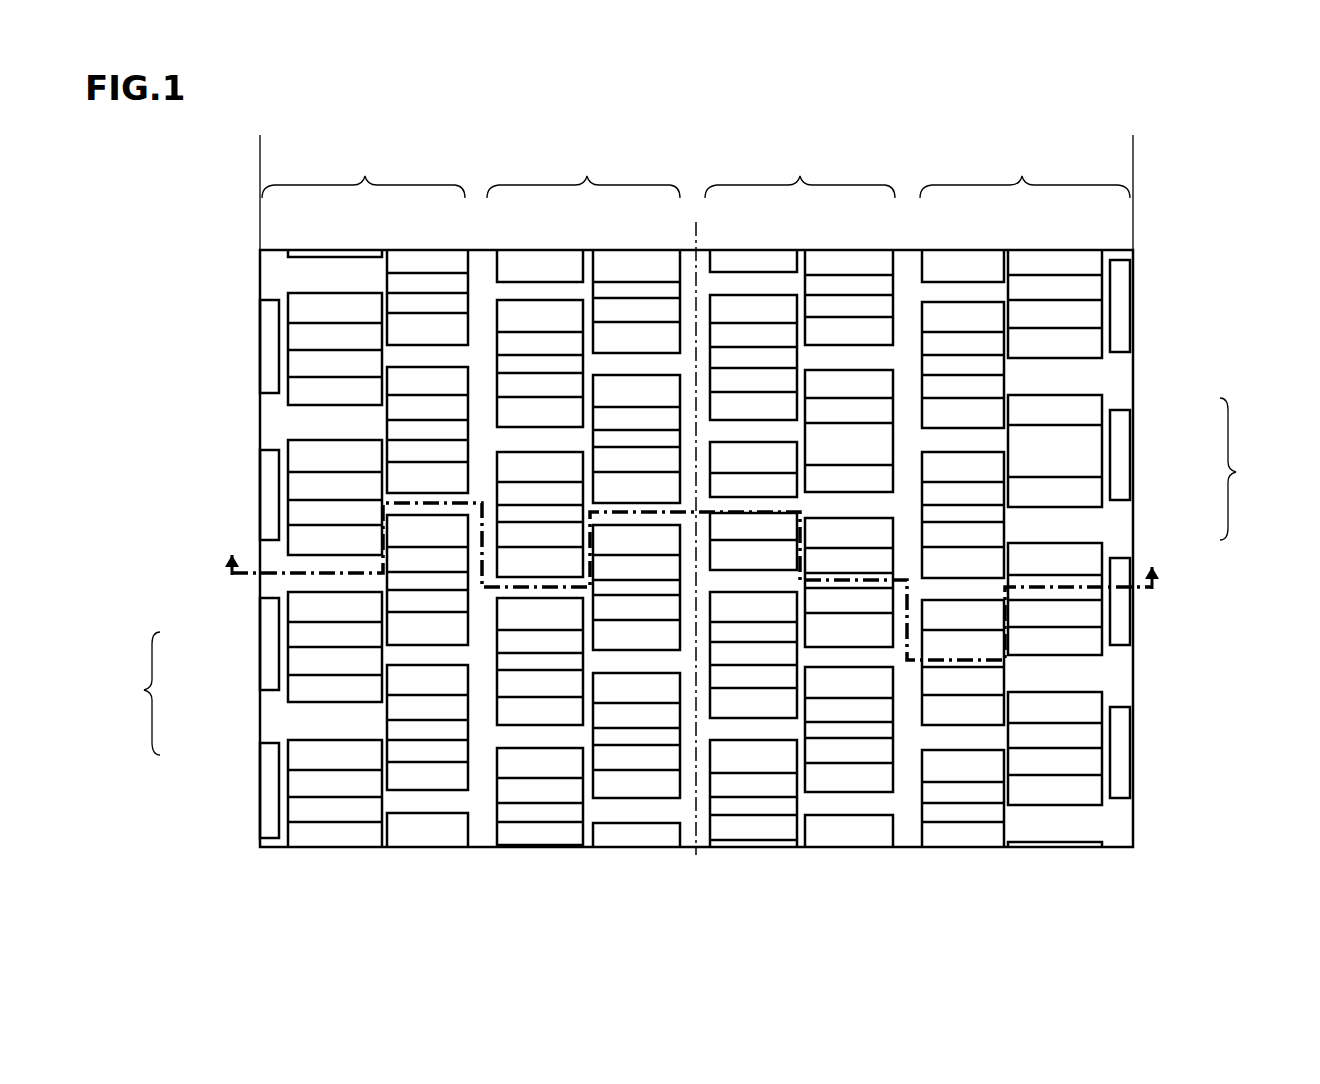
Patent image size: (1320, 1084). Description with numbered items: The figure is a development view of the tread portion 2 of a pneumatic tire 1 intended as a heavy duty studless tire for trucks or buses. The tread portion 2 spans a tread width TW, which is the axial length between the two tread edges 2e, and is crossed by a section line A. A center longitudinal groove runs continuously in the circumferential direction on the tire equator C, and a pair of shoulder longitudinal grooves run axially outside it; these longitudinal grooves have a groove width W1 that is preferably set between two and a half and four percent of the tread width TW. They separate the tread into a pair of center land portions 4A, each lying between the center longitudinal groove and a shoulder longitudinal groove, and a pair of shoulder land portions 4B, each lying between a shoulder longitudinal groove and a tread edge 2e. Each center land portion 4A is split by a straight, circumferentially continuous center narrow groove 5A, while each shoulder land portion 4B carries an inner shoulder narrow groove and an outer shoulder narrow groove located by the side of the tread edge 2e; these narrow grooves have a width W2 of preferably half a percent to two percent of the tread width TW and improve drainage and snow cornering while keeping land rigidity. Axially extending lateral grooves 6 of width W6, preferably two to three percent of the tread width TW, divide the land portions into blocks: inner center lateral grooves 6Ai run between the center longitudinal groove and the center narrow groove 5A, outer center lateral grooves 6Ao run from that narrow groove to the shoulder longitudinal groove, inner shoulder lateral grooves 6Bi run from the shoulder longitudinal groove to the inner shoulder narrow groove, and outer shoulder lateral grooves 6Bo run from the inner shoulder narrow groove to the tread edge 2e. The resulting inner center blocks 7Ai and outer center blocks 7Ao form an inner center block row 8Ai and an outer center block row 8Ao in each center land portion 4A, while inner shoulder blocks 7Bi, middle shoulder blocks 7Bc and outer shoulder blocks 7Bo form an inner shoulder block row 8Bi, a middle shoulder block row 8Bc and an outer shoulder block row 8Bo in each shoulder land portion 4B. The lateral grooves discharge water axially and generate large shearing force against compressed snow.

The pneumatic tire 1 is at (1215, 262).
The tread portion 2 is at (325, 393).
The tread edge 2e is at (268, 322).
The center land portion 4A is at (583, 174).
The shoulder land portion 4B is at (363, 174).
The center narrow groove 5A is at (590, 827).
The lateral groove 6 is at (693, 576).
The inner center lateral groove 6Ai is at (762, 432).
The outer center lateral groove 6Ao is at (848, 508).
The inner shoulder lateral groove 6Bi is at (942, 592).
The outer shoulder lateral groove 6Bo is at (1055, 530).
The outer shoulder block 7Bo is at (272, 805).
The middle shoulder block 7Bc is at (338, 773).
The inner shoulder block 7Bi is at (435, 768).
The outer center block 7Ao is at (562, 702).
The inner center block 7Ai is at (637, 775).
The outer shoulder block row 8Bo is at (268, 322).
The middle shoulder block row 8Bc is at (360, 312).
The inner shoulder block row 8Bi is at (437, 390).
The outer center block row 8Ao is at (544, 327).
The inner center block row 8Ai is at (613, 388).
The tread width TW is at (1133, 143).
The groove width of longitudinal grooves W1 is at (860, 755).
The groove width of narrow grooves W2 is at (915, 492).
The groove width of lateral grooves W6 is at (635, 405).
The tire equator C is at (692, 533).
The section line A- A is at (691, 581).